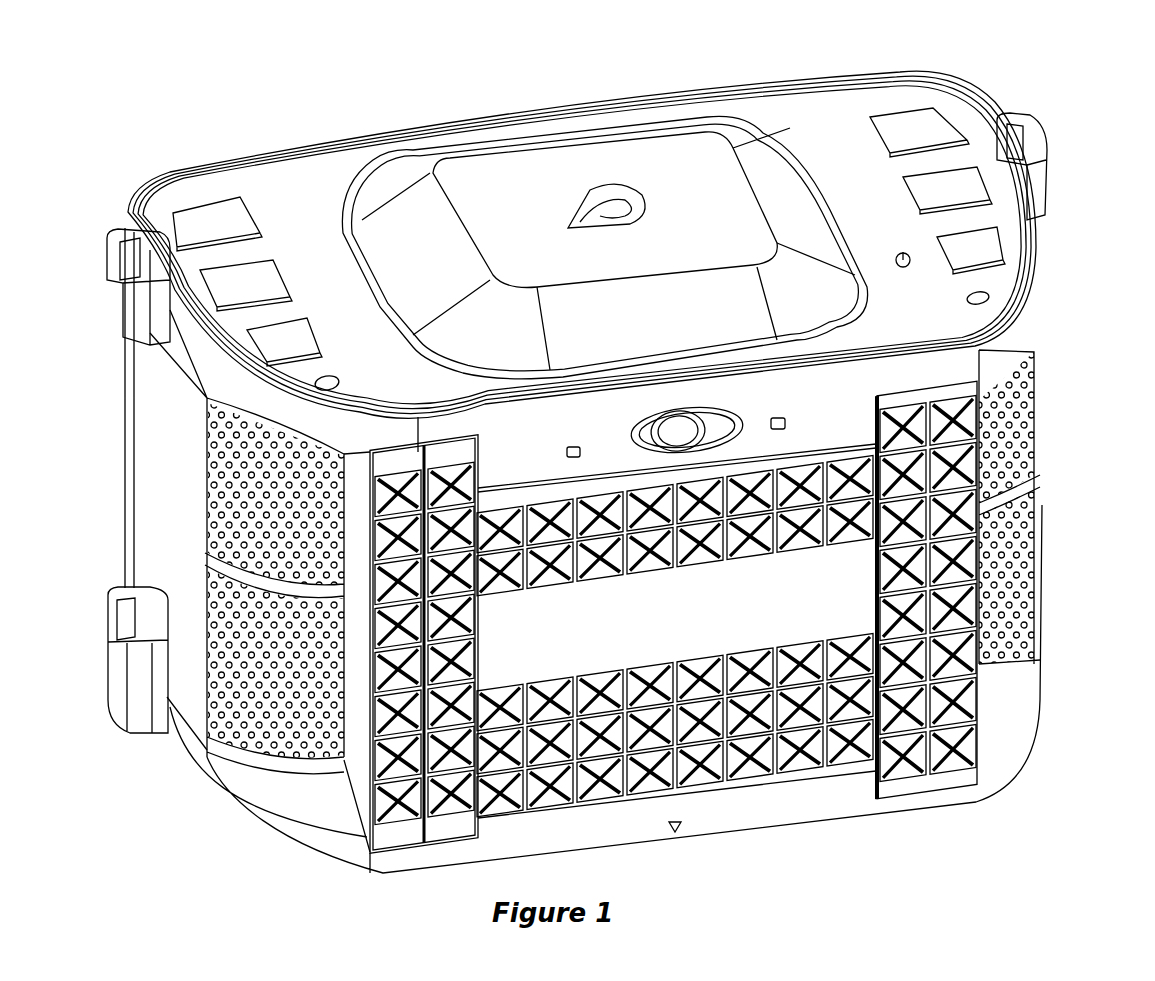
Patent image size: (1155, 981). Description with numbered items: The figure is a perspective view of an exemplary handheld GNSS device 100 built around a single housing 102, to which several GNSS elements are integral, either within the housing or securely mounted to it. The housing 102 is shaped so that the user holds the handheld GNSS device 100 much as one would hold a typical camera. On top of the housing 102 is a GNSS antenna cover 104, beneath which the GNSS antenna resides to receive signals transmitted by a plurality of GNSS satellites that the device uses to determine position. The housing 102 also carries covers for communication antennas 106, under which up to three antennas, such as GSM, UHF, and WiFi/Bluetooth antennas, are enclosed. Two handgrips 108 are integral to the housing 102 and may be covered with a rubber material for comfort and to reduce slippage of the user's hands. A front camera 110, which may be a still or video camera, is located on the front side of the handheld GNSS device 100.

The handheld GNSS device 100 is at (520, 68).
The housing 102 is at (152, 360).
The GNSS antenna cover 104 is at (713, 197).
The covers for communication antennas 106 is at (478, 657).
The handgrip 108 is at (247, 503).
The front camera 110 is at (722, 418).